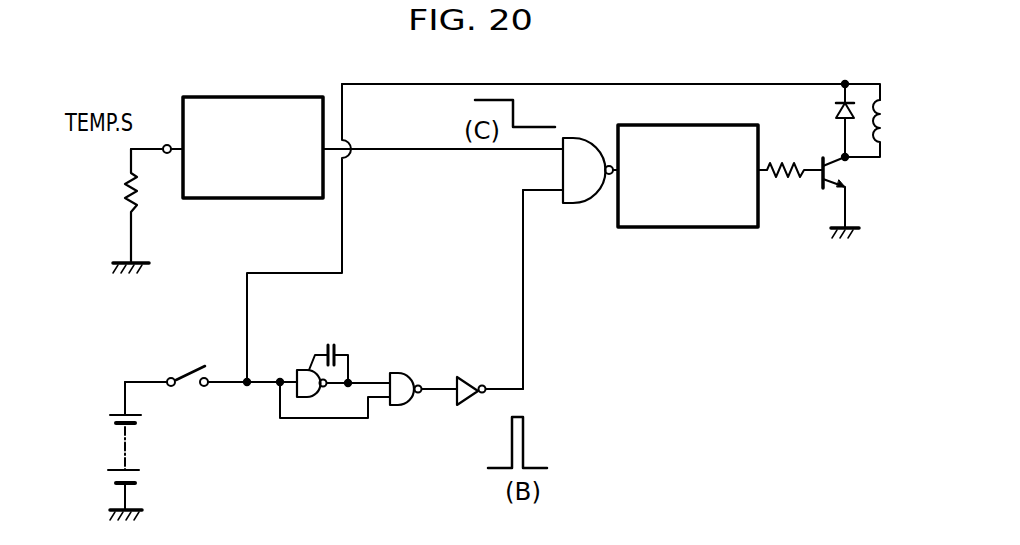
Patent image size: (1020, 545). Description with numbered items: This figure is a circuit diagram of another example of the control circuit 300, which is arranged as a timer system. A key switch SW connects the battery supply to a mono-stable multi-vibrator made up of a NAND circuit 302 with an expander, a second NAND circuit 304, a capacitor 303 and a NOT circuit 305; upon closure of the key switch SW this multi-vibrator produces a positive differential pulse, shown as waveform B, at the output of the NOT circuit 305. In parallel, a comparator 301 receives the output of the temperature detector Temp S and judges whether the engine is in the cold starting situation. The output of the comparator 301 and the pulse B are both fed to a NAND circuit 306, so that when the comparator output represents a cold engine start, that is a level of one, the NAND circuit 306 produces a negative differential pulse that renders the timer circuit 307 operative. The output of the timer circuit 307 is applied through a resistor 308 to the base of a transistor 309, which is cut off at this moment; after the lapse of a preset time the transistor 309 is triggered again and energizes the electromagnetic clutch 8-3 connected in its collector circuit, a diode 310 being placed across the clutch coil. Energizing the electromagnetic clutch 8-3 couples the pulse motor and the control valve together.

The control circuit 300 is at (611, 70).
The comparator 301 is at (272, 204).
The NAND circuit with expander 302 is at (315, 393).
The capacitor 303 is at (345, 334).
The NAND circuit 304 is at (407, 403).
The NOT circuit 305 is at (468, 373).
The NAND circuit 306 is at (585, 205).
The timer circuit 307 is at (727, 222).
The resistor 308 is at (795, 180).
The transistor 309 is at (838, 175).
The diode 310 is at (835, 111).
The electromagnetic clutch 8-3 is at (895, 122).
The positive differential pulse B is at (131, 438).
The key switch SW is at (193, 366).